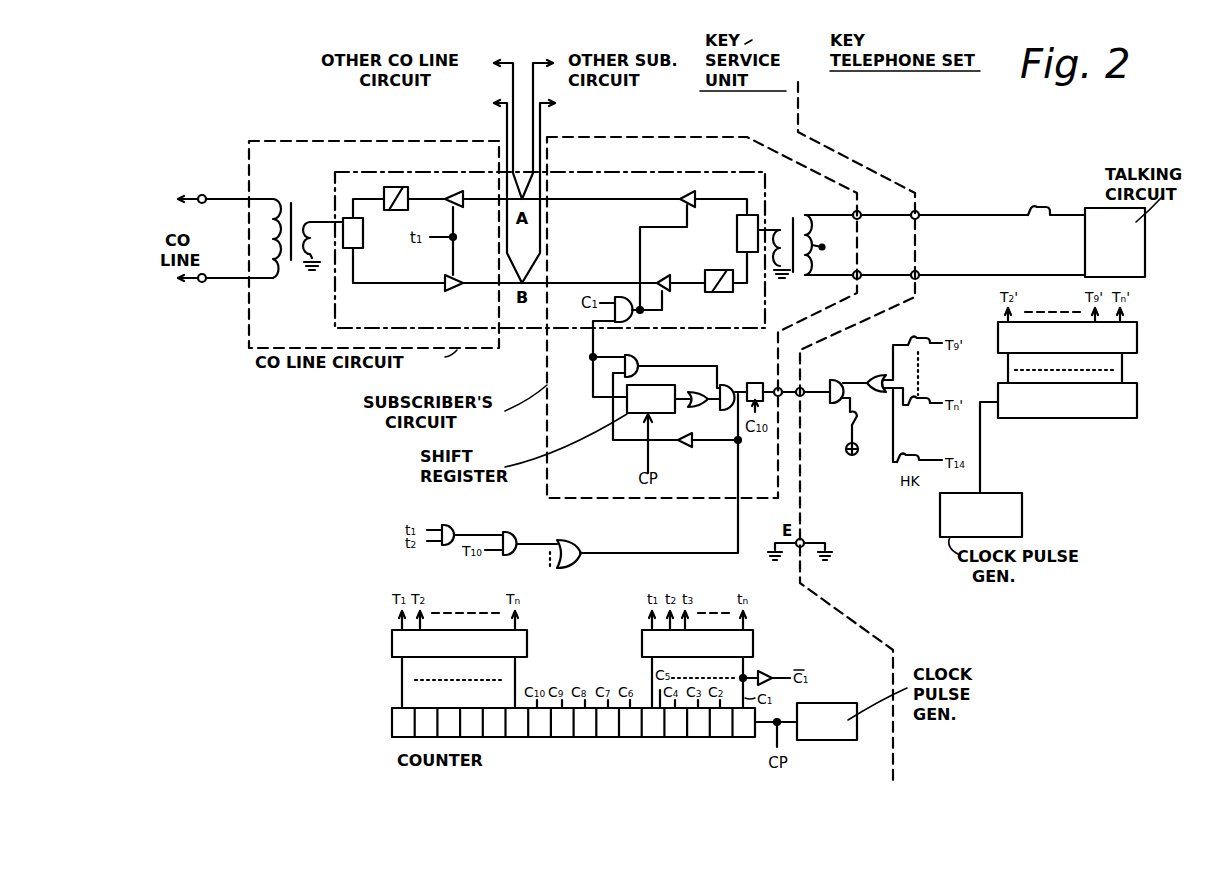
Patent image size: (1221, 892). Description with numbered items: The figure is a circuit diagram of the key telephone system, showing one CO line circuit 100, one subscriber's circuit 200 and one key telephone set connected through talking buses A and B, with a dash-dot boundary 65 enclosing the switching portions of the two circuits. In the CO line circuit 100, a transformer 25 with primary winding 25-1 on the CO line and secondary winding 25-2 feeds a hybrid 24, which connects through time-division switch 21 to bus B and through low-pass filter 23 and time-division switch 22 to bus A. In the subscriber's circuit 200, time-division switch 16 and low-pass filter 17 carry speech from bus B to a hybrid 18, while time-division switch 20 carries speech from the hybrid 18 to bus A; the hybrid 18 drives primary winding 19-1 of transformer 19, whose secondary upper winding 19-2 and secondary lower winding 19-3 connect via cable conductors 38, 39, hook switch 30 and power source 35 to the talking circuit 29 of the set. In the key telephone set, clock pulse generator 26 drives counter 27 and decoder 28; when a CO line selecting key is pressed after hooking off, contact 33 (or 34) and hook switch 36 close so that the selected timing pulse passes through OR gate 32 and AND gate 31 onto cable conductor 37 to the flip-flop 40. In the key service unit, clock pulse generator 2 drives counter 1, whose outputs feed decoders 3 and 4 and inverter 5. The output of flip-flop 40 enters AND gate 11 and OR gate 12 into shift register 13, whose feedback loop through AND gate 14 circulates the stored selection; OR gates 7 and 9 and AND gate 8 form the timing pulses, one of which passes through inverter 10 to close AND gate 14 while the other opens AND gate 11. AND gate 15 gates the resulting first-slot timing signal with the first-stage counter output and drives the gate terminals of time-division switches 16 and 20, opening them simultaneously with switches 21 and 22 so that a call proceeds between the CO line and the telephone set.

The counter 1 is at (580, 737).
The clock pulse generator 2 is at (828, 740).
The decoder 3 is at (642, 646).
The decoder 4 is at (527, 642).
The inverter 5 is at (766, 671).
The OR gate 7 is at (452, 525).
The AND gate 8 is at (511, 532).
The OR gate 9 is at (580, 542).
The inverter 10 is at (686, 447).
The AND gate 11 is at (728, 385).
The OR gate 12 is at (695, 392).
The shift register 13 is at (640, 405).
The AND gate 14 is at (638, 358).
The AND gate 15 is at (615, 297).
The time-division switch 16 is at (667, 291).
The low-pass filter 17 is at (723, 292).
The hybrid 18 is at (737, 243).
The transformer 19 is at (794, 247).
The primary winding of transformer 19-1 is at (782, 230).
The secondary upper winding of transformer 19-2 is at (808, 214).
The secondary lower winding of transformer 19-3 is at (812, 292).
The time-division switch 20 is at (680, 196).
The time-division switch 21 is at (454, 291).
The time-division switch 22 is at (455, 191).
The low-pass filter 23 is at (396, 187).
The hybrid 24 is at (363, 240).
The transformer 25 is at (296, 228).
The primary winding of transformer 25-1 is at (281, 199).
The secondary winding of transformer 25-2 is at (310, 222).
The clock pulse generator 26 is at (1023, 512).
The counter 27 is at (1140, 402).
The decoder 28 is at (1140, 340).
The talking circuit 29 is at (1148, 240).
The hook switch 30 is at (1040, 205).
The AND gate 31 is at (830, 383).
The OR gate 32 is at (874, 377).
The contact of CO line selecting key 33 is at (920, 338).
The contact of CO line selecting key 34 is at (918, 406).
The power source 35 is at (826, 250).
The hook switch 36 is at (862, 450).
The cable conductor 37 is at (790, 397).
The cable conductor 38 is at (892, 218).
The cable conductor 39 is at (890, 278).
The flip-flop circuit 40 is at (755, 383).
The subscriber's circuit boundary 65 is at (600, 172).
The CO line circuit 100 is at (393, 141).
The subscriber's circuit 200 is at (650, 137).